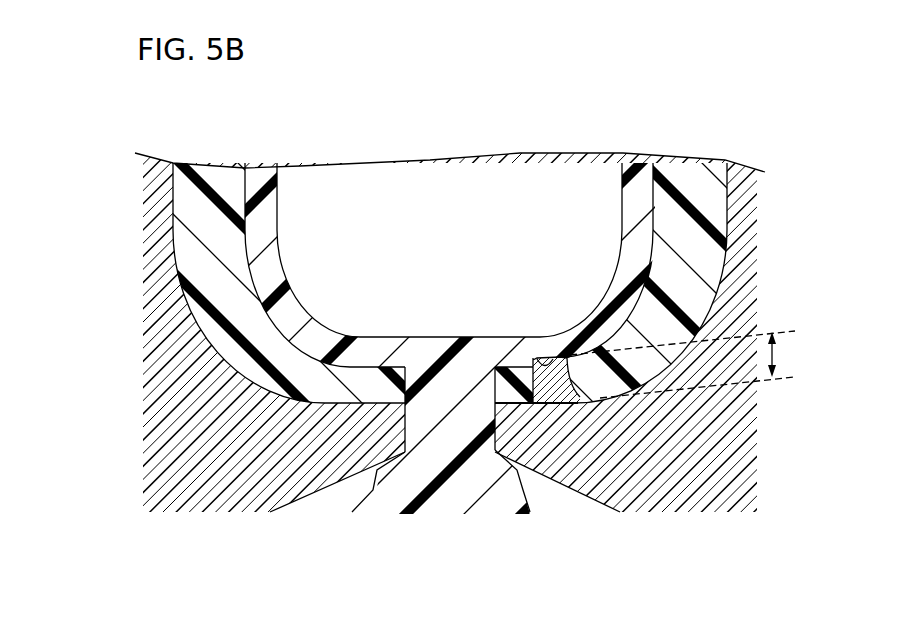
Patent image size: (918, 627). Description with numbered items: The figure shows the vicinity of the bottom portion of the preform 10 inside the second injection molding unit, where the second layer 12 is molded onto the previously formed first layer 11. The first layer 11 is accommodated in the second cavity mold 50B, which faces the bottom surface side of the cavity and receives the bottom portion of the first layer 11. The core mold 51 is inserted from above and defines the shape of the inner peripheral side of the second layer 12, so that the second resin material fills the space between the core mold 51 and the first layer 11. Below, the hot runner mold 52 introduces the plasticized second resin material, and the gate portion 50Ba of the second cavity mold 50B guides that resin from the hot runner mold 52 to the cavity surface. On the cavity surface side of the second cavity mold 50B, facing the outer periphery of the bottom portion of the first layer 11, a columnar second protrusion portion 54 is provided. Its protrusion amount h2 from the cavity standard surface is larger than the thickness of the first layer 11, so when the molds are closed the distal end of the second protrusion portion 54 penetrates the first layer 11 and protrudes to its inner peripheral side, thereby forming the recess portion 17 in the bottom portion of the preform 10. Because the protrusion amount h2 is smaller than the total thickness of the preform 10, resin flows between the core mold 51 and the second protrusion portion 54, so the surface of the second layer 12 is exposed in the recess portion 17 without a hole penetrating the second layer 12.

The core mold 51 is at (289, 163).
The preform 10 is at (459, 330).
The first layer 11 is at (734, 236).
The second layer 12 is at (617, 213).
The recess portion 17 is at (537, 357).
The second cavity mold 50B is at (128, 386).
The gate portion 50Ba is at (403, 428).
The hot runner mold 52 is at (323, 500).
The second protrusion portion 54 is at (553, 390).
The protrusion amount h2 is at (702, 364).